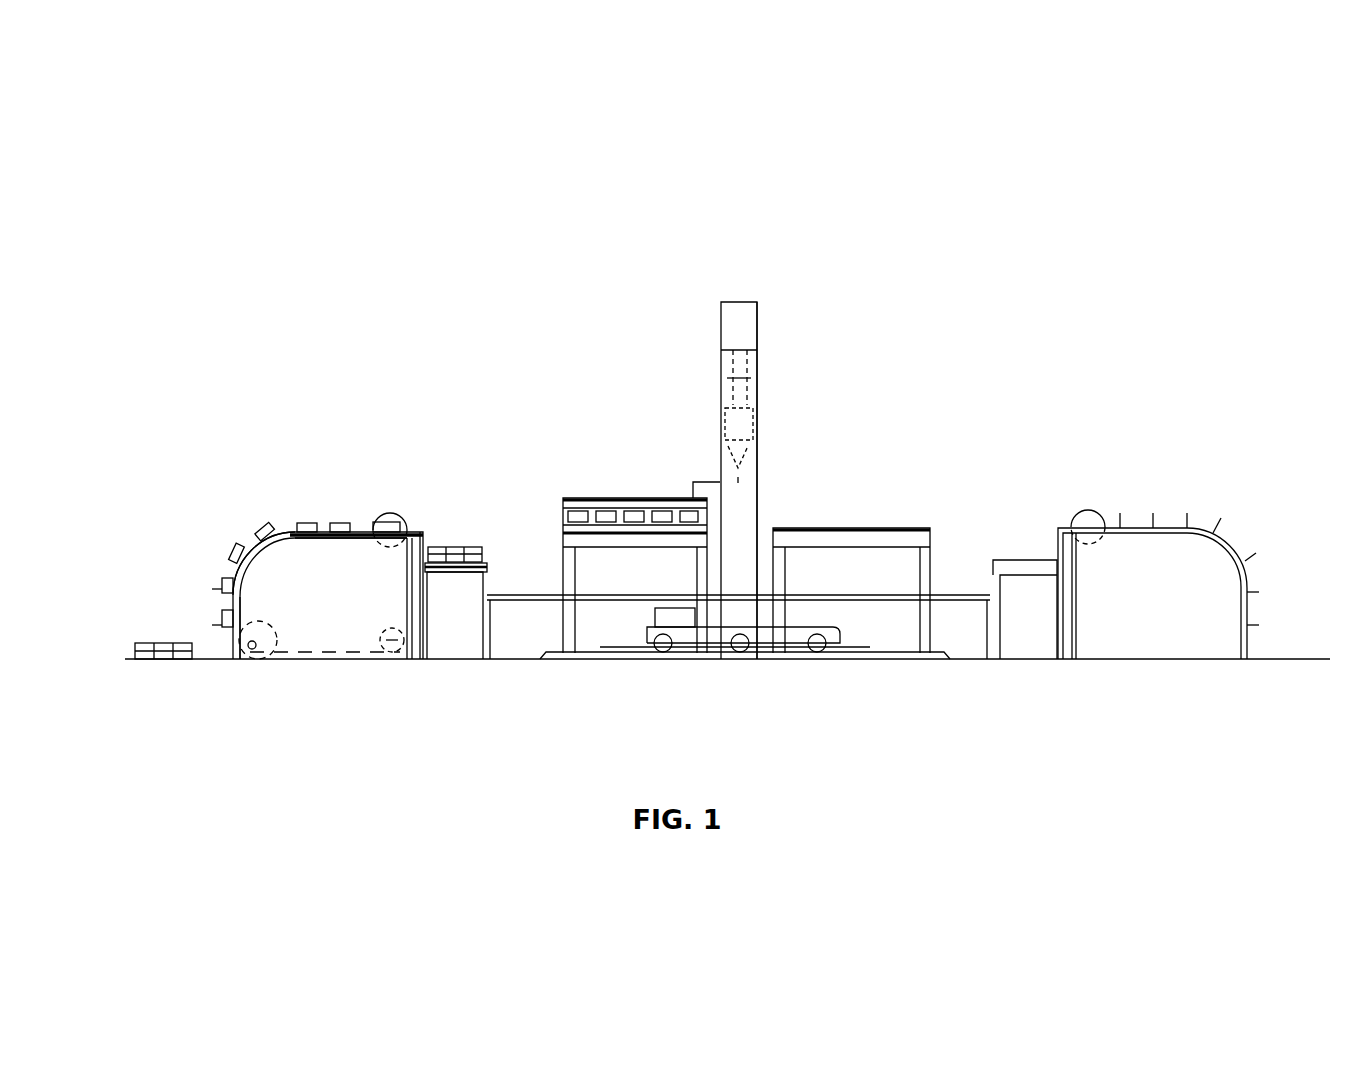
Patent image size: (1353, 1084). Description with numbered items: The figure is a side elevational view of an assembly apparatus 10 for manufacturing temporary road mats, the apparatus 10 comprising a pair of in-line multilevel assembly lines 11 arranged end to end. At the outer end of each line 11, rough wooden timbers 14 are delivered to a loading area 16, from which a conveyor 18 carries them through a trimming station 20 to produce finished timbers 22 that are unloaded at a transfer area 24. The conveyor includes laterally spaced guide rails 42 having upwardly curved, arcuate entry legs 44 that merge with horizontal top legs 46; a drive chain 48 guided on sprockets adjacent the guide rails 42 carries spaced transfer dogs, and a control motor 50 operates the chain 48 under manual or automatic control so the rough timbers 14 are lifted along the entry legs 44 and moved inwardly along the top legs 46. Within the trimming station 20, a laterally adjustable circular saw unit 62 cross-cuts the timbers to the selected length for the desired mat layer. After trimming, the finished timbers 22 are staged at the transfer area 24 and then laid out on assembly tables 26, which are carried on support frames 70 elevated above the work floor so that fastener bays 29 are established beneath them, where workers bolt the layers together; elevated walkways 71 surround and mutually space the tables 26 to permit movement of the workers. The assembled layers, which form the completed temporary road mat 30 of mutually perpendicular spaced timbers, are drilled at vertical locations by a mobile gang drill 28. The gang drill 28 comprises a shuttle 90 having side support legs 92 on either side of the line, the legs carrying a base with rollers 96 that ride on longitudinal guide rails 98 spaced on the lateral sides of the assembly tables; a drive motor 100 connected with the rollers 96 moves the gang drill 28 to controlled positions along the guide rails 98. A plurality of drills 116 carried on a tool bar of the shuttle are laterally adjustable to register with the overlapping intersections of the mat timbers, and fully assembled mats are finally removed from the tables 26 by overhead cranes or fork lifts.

The assembly apparatus 10 is at (452, 357).
The assembly line 11 is at (728, 404).
The rough wooden timbers 14 is at (143, 643).
The loading area 16 is at (145, 453).
The conveyor 18 is at (240, 543).
The trimming station 20 is at (375, 490).
The finished timbers 22 is at (462, 547).
The transfer area 24 is at (445, 628).
The assembly tables 26 is at (563, 532).
The mobile gang drill 28 is at (753, 293).
The fastener bays 29 is at (764, 590).
The temporary road mat 30 is at (643, 497).
The guide rails 42 is at (267, 552).
The arcuate entry legs 44 is at (235, 598).
The horizontal top legs 46 is at (348, 540).
The drive chain 48 is at (350, 650).
The control motor 50 is at (297, 523).
The circular saw unit 62 is at (388, 520).
The support frames 70 is at (573, 630).
The elevated walkways 71 is at (965, 593).
The shuttle 90 is at (718, 373).
The side support legs 92 is at (757, 390).
The rollers 96 is at (742, 648).
The longitudinal guide rails 98 is at (933, 655).
The drive motor 100 is at (668, 615).
The drills 116 is at (742, 432).